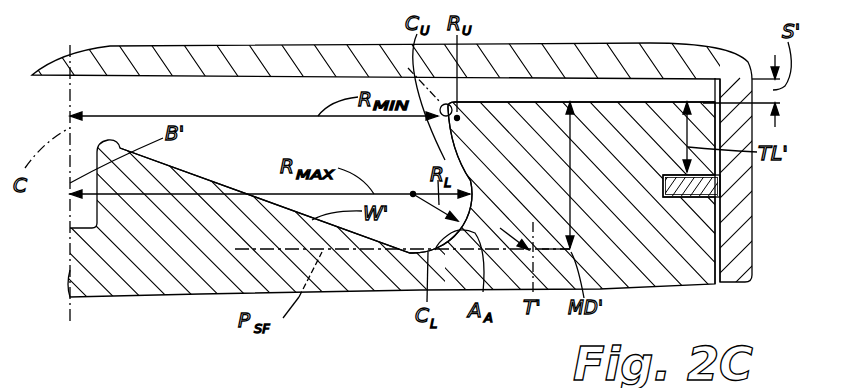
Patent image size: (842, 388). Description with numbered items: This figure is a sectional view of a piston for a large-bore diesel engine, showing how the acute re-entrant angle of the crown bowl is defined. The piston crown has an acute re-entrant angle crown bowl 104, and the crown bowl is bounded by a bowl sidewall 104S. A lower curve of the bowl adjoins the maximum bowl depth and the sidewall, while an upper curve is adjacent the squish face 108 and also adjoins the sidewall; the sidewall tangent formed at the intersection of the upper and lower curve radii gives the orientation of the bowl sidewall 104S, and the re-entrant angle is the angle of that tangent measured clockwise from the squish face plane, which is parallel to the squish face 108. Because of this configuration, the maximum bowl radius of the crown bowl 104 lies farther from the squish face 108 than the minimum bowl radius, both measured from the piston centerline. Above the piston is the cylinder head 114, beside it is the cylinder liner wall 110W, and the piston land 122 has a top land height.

The acute re-entrant angle crown bowl 104 is at (268, 150).
The bowl sidewall 104S is at (450, 143).
The squish face 108 is at (556, 100).
The cylinder liner wall 110W is at (715, 260).
The cylinder head 114 is at (262, 76).
The piston land 122 is at (720, 170).